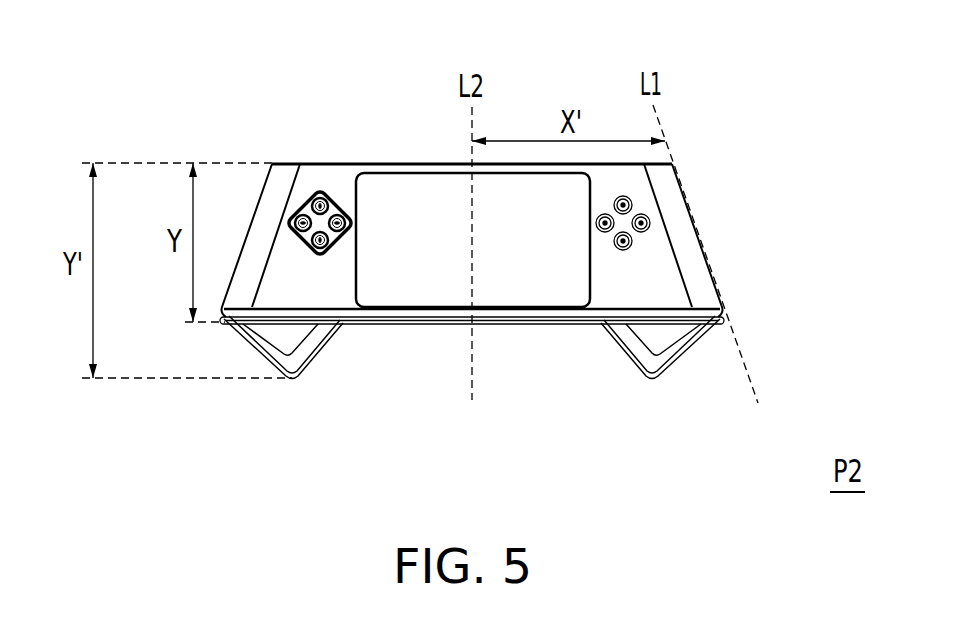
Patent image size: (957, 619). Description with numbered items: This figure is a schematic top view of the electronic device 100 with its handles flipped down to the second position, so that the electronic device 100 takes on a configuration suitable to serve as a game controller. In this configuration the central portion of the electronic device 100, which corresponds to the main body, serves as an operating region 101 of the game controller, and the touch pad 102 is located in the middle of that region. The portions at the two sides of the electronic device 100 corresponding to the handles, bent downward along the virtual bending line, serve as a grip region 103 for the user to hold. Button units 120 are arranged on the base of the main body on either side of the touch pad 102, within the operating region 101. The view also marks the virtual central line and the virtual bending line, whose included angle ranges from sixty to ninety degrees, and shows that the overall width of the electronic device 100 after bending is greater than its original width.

The electronic device 100 is at (162, 57).
The operating region 101 is at (527, 318).
The touch pad 102 is at (430, 195).
The grip region 103 is at (318, 350).
The button unit 120 is at (338, 193).